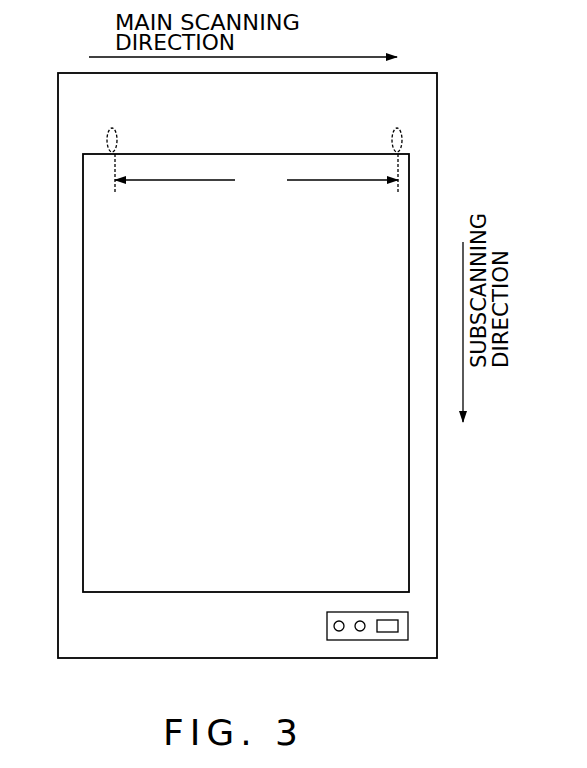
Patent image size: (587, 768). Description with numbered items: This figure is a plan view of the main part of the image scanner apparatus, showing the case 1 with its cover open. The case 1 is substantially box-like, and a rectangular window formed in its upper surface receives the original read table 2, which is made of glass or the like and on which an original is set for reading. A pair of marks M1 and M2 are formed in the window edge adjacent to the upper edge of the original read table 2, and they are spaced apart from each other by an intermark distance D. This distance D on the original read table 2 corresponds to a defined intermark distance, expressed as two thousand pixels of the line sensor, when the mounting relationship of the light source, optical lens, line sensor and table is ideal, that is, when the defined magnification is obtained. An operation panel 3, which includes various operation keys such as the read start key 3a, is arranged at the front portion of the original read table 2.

The case 1 is at (424, 477).
The original read table 2 is at (88, 472).
The operation panel 3 is at (408, 627).
The read start key 3a is at (335, 626).
The mark M1 is at (117, 131).
The mark M2 is at (392, 131).
The intermark distance D is at (256, 173).